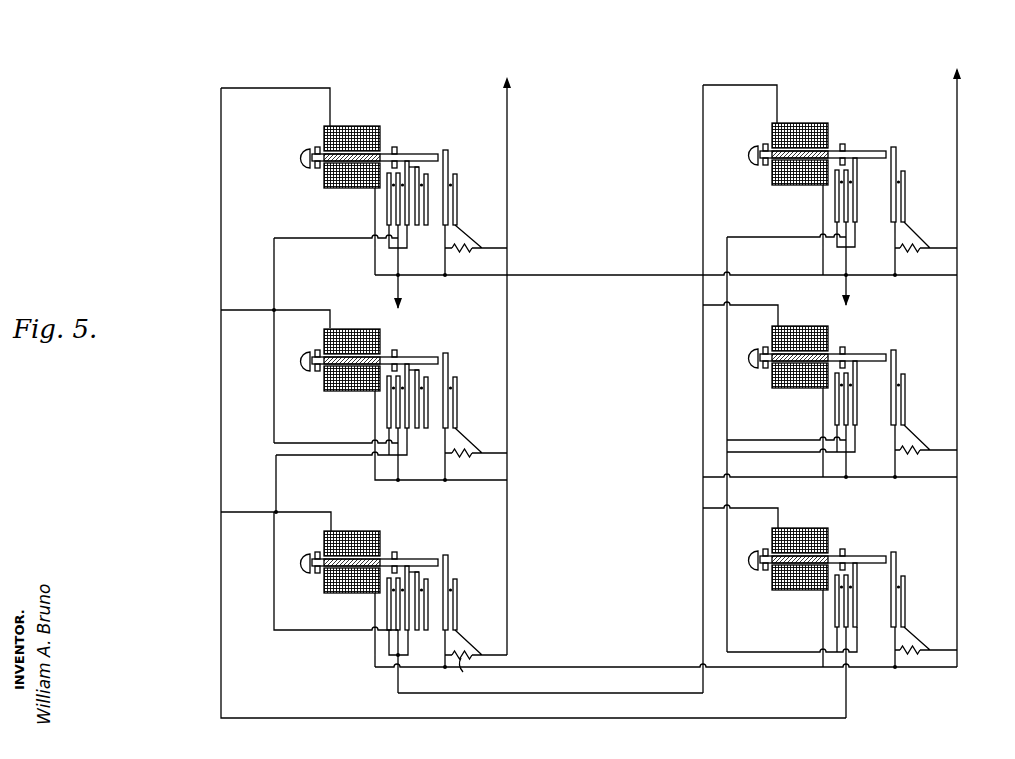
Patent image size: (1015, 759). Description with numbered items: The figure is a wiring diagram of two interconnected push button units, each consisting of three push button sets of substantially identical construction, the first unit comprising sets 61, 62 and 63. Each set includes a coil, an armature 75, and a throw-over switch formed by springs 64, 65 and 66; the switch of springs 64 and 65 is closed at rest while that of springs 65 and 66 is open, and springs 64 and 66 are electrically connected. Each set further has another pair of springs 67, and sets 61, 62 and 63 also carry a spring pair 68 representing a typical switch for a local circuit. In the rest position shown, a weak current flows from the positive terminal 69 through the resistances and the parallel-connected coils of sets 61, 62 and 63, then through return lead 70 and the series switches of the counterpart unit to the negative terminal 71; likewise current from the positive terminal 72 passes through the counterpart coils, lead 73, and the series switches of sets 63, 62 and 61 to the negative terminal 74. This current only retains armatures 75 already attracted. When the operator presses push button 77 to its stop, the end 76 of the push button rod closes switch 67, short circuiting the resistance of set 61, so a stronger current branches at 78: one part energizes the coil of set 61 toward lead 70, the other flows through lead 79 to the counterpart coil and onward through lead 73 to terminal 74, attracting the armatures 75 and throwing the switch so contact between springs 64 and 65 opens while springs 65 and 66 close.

The push button set 61 is at (364, 248).
The push button set 62 is at (364, 430).
The push button set 63 is at (390, 602).
The spring 64 is at (389, 182).
The spring 65 is at (400, 172).
The spring 66 is at (408, 164).
The pair of springs 67 is at (456, 173).
The spring pair 68 is at (428, 192).
The positive terminal 69 is at (519, 350).
The return lead 70 is at (533, 413).
The negative terminal 71 is at (852, 315).
The positive terminal 72 is at (970, 354).
The lead 73 is at (550, 689).
The negative terminal 74 is at (400, 318).
The armature 75 is at (317, 148).
The end of the push button rod 76 is at (437, 153).
The push button 77 is at (298, 157).
The branch point 78 is at (447, 278).
The lead 79 is at (605, 265).